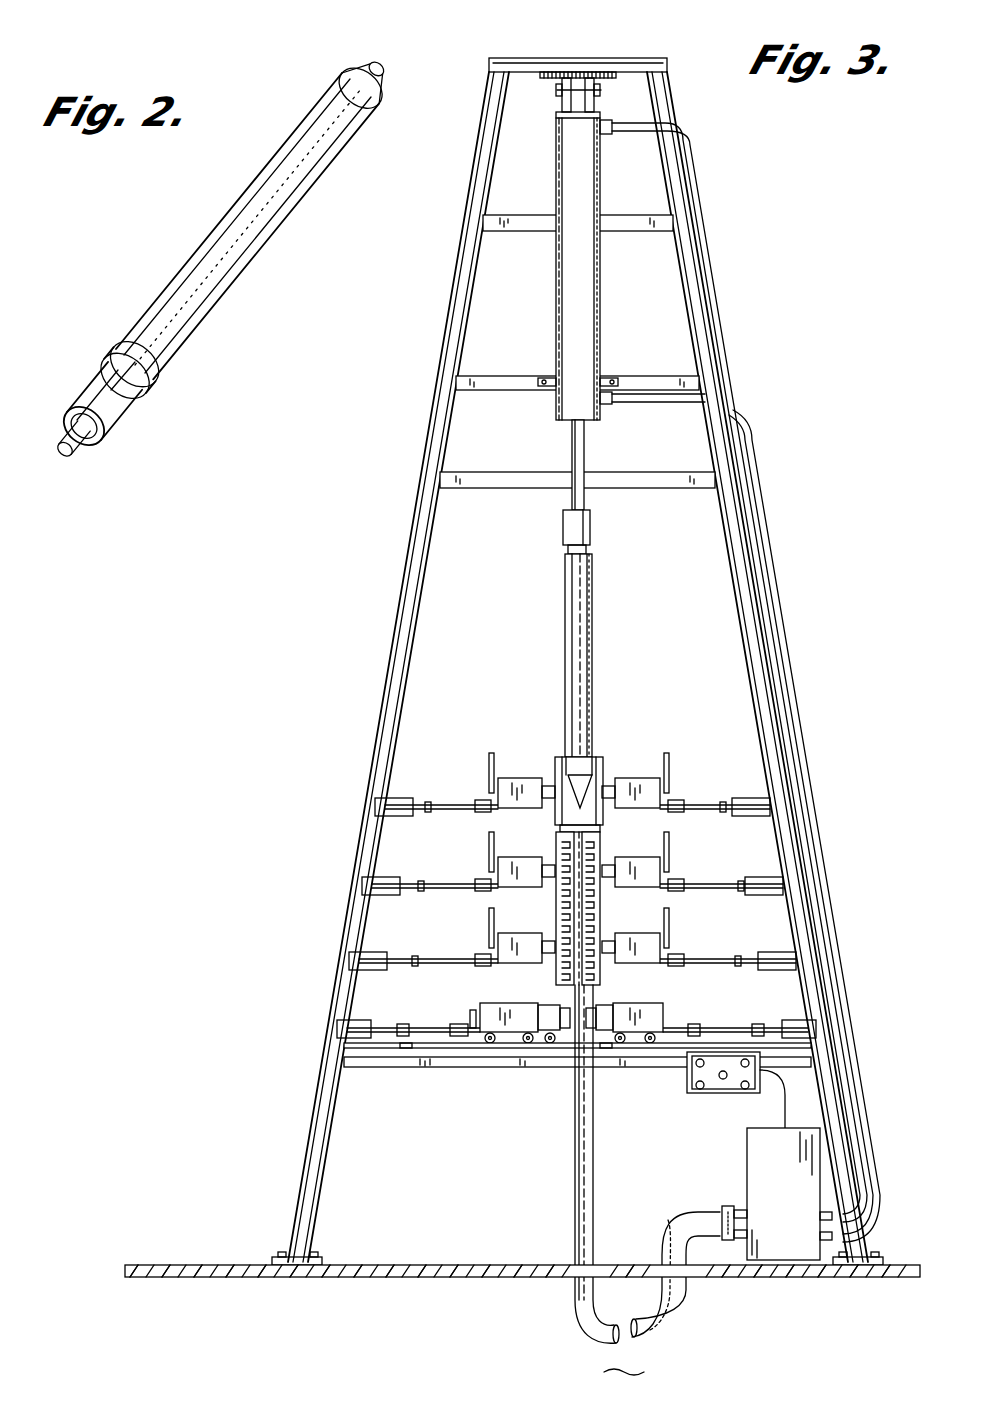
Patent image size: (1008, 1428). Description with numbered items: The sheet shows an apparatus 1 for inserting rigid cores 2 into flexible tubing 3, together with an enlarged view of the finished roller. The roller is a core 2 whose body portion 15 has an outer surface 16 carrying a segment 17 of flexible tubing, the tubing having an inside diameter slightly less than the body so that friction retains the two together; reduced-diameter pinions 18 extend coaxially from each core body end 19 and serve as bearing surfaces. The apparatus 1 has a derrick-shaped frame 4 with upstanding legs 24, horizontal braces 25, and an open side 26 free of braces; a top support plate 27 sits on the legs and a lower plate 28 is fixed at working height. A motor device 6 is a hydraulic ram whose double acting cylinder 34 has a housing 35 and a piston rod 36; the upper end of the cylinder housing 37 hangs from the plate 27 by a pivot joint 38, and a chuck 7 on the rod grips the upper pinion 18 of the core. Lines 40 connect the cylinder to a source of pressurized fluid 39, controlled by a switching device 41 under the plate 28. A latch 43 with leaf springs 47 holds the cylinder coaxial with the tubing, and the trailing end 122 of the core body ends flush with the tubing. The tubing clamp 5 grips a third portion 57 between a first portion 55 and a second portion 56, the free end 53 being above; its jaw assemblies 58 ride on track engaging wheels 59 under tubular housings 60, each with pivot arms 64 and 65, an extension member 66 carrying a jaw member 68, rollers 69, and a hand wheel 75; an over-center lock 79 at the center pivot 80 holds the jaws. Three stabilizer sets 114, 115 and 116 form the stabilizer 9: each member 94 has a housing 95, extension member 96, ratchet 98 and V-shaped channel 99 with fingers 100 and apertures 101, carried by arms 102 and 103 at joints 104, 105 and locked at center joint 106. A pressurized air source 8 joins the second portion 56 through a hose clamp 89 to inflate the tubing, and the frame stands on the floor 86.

In FIG. 3, the apparatus 1 is at (836, 365).
In FIG. 2, the rigid core 2 is at (86, 400).
In FIG. 3, the rigid core 2 is at (592, 630).
In FIG. 3, the flexible tubing 3 is at (594, 1146).
In FIG. 3, the frame 4 is at (456, 284).
In FIG. 3, the tubing clamp 5 is at (690, 1008).
In FIG. 3, the motor device 6 is at (556, 160).
In FIG. 3, the chuck 7 is at (591, 523).
In FIG. 3, the pressurized air source 8 is at (747, 1183).
In FIG. 3, the stabilizer 9 is at (468, 800).
In FIG. 2, the core body portion 15 is at (128, 408).
In FIG. 3, the core body portion 15 is at (572, 664).
In FIG. 2, the outer surface 16 is at (108, 372).
In FIG. 3, the outer surface 16 is at (592, 674).
In FIG. 2, the tubing segment 17 is at (236, 208).
In FIG. 2, the pinion 18 is at (372, 64).
In FIG. 2, the core body end 19 is at (68, 426).
In FIG. 3, the leg 24 is at (745, 594).
In FIG. 3, the horizontal brace 25 is at (513, 378).
In FIG. 3, the open side 26 is at (470, 625).
In FIG. 3, the top support plate 27 is at (596, 58).
In FIG. 3, the lower plate 28 is at (380, 1062).
In FIG. 3, the double acting cylinder 34 is at (600, 300).
In FIG. 3, the cylinder housing 35 is at (556, 285).
In FIG. 3, the piston rod 36 is at (585, 456).
In FIG. 3, the upper end of cylinder housing 37 is at (562, 113).
In FIG. 3, the pivot joint 38 is at (601, 90).
In FIG. 3, the source of pressurized fluid 39 is at (796, 1197).
In FIG. 3, the hydraulic lines 40 is at (737, 352).
In FIG. 3, the switching device 41 is at (716, 1094).
In FIG. 3, the latch 43 is at (612, 378).
In FIG. 3, the leaf spring 47 is at (548, 390).
In FIG. 3, the tubing free end 53 is at (598, 757).
In FIG. 3, the tubing first portion 55 is at (558, 757).
In FIG. 3, the tubing second portion 56 is at (575, 1192).
In FIG. 3, the tubing third portion 57 is at (566, 1062).
In FIG. 3, the jaw assembly 58 is at (478, 1000).
In FIG. 3, the track engaging wheel 59 is at (506, 1044).
In FIG. 3, the tubular housing 60 is at (508, 990).
In FIG. 3, the pivot arm 64 is at (458, 1024).
In FIG. 3, the outer pivot arm 65 is at (345, 1028).
In FIG. 3, the extension member 66 is at (604, 1005).
In FIG. 3, the jaw member 68 is at (547, 1005).
In FIG. 3, the roller 69 is at (608, 1050).
In FIG. 3, the hand wheel 75 is at (700, 1018).
In FIG. 3, the over-center lock mechanism 79 is at (738, 800).
In FIG. 3, the center pivot 80 is at (405, 1048).
In FIG. 3, the floor 86 is at (395, 1265).
In FIG. 3, the hose clamp 89 is at (728, 1240).
In FIG. 3, the stabilizer member 94 is at (536, 778).
In FIG. 3, the stabilizer housing 95 is at (612, 810).
In FIG. 3, the extension member 96 is at (617, 778).
In FIG. 3, the ratchet 98 is at (667, 780).
In FIG. 3, the V-shaped channel 99 is at (556, 852).
In FIG. 3, the mating finger 100 is at (602, 896).
In FIG. 3, the aperture 101 is at (560, 896).
In FIG. 3, the arm 102 is at (722, 812).
In FIG. 3, the arm 103 is at (400, 814).
In FIG. 3, the joint 104 is at (800, 812).
In FIG. 3, the joint 105 is at (680, 884).
In FIG. 3, the center joint 106 is at (432, 802).
In FIG. 3, the stabilizer set 114 is at (656, 752).
In FIG. 3, the stabilizer set 115 is at (518, 850).
In FIG. 3, the stabilizer set 116 is at (512, 926).
In FIG. 3, the trailing end 122 is at (588, 552).